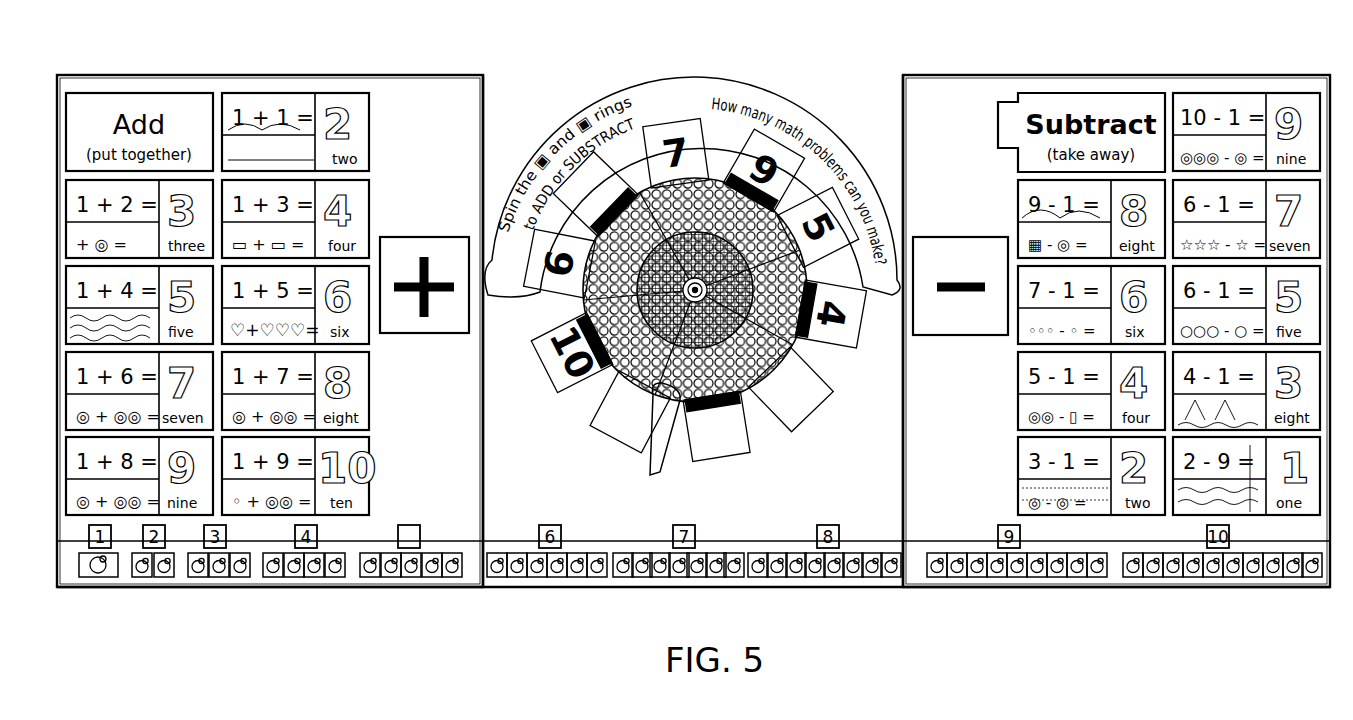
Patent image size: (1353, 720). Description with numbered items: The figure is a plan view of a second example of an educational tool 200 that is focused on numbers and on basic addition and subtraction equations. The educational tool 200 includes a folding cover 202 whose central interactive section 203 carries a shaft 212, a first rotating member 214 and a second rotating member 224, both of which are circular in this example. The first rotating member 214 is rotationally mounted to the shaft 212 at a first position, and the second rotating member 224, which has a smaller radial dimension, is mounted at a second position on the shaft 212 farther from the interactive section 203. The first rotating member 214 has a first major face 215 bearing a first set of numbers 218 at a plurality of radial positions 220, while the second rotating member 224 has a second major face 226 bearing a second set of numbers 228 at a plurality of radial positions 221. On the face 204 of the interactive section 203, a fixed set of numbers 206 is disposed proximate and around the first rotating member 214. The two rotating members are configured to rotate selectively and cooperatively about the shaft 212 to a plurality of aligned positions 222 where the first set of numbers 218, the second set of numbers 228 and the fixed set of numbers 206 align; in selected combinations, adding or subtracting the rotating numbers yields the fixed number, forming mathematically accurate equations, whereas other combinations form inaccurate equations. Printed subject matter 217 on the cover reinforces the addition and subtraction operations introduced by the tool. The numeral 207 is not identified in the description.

The educational tool 200 is at (675, 47).
The folding cover 202 is at (267, 57).
The interactive section 203 is at (538, 82).
The face 204 is at (866, 82).
The fixed set of numbers 206 is at (615, 186).
The number tab 207 is at (428, 524).
The shaft 212 is at (806, 272).
The first rotating member 214 is at (755, 405).
The first major face 215 is at (620, 373).
The printed subject matter 217 is at (402, 178).
The first set of numbers 218 is at (600, 285).
The radial positions 220 is at (714, 194).
The radial positions 221 is at (752, 240).
The aligned positions 222 is at (601, 245).
The second rotating member 224 is at (800, 345).
The second major face 226 is at (815, 352).
The second set of numbers 228 is at (662, 462).